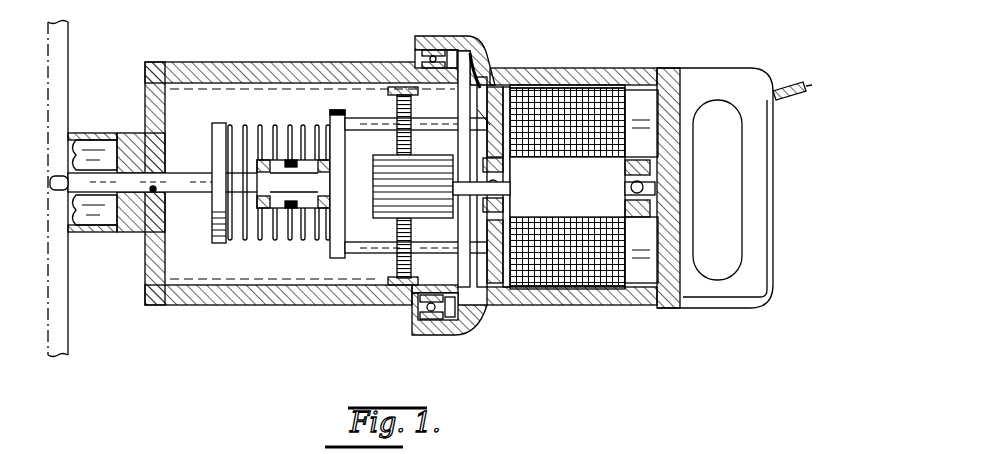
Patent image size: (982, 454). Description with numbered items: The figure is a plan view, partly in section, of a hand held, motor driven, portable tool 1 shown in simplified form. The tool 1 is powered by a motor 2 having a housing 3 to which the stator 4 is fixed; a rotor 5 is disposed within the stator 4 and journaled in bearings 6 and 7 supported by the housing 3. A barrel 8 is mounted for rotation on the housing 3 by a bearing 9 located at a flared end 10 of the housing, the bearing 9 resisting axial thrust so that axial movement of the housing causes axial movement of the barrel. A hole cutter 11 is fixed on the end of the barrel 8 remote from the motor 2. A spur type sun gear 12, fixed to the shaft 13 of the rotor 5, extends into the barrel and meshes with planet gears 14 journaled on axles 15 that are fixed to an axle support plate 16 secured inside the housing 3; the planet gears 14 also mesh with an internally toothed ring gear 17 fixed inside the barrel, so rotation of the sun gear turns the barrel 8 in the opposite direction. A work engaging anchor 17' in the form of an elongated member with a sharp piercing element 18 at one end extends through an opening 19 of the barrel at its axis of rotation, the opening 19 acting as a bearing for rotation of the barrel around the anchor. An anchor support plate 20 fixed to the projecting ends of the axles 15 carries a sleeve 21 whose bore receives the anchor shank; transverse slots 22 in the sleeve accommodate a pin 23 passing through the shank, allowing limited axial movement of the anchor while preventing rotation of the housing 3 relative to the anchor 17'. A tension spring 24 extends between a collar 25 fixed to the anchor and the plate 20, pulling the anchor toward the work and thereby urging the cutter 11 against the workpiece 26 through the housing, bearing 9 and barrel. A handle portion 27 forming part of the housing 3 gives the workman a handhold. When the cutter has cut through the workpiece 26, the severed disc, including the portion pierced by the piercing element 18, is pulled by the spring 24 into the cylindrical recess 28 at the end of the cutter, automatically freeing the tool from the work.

The portable tool 1 is at (392, 58).
The motor 2 is at (619, 66).
The housing 3 is at (560, 78).
The stator 4 is at (587, 100).
The rotor 5 is at (575, 195).
The bearing 6 is at (630, 226).
The bearing 7 is at (513, 167).
The barrel 8 is at (296, 306).
The bearing 9 is at (419, 328).
The flared end 10 is at (445, 336).
The hole cutter 11 is at (83, 232).
The sun gear 12 is at (386, 156).
The shaft 13 is at (464, 166).
The planet gears 14 is at (395, 262).
The axles 15 is at (352, 246).
The axle support plate 16 is at (500, 290).
The ring gear 17 is at (390, 215).
The work engaging anchor 17' is at (199, 168).
The piercing element 18 is at (52, 176).
The opening 19 is at (160, 192).
The anchor support plate 20 is at (331, 118).
The sleeve 21 is at (262, 176).
The transverse slots 22 is at (281, 152).
The pin 23 is at (300, 168).
The tension spring 24 is at (262, 243).
The collar 25 is at (212, 141).
The workpiece 26 is at (54, 330).
The handle portion 27 is at (771, 190).
The cylindrical recess 28 is at (98, 133).